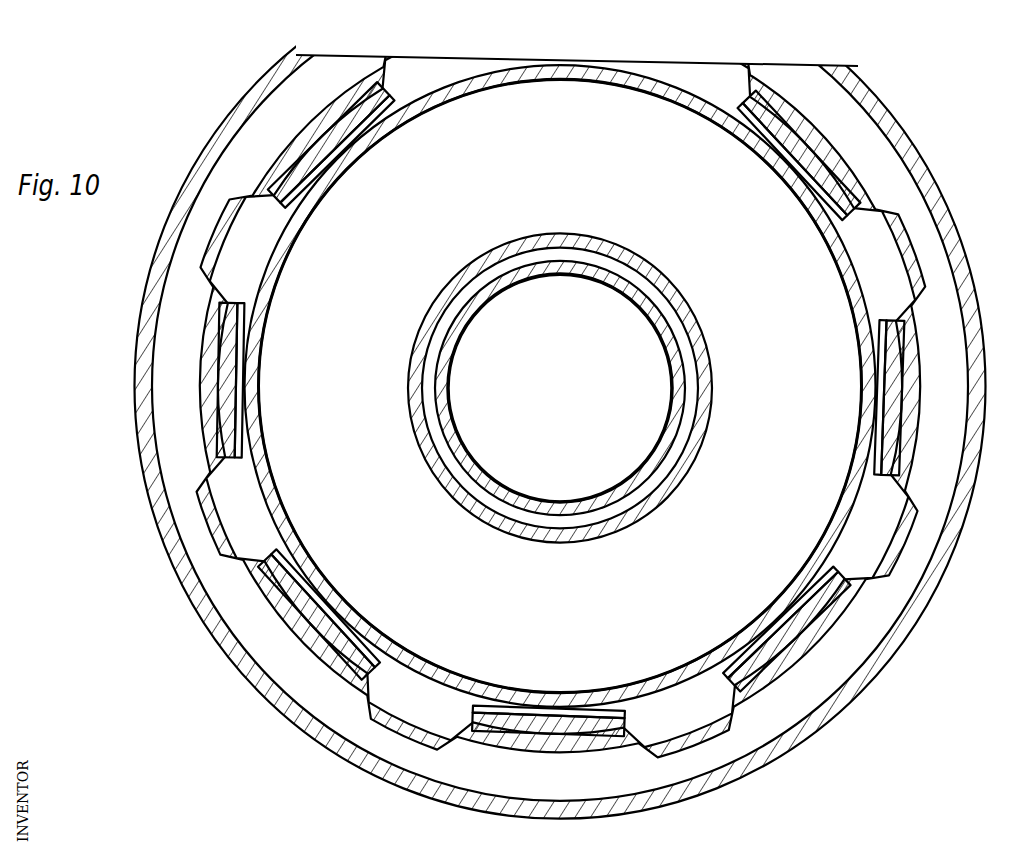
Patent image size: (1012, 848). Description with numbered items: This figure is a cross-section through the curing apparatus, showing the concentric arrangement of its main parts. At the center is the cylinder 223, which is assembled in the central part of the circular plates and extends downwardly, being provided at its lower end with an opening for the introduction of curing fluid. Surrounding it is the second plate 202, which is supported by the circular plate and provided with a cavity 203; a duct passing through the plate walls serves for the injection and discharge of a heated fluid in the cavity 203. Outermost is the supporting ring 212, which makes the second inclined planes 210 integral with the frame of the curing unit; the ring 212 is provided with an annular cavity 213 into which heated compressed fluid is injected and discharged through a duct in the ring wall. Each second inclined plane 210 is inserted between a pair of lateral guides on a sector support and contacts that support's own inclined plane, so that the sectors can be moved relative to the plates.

The second plate 202 is at (422, 358).
The cavity 203 is at (525, 550).
The second inclined plane 210 is at (311, 166).
The supporting ring 212 is at (138, 334).
The annular cavity 213 is at (170, 399).
The cylinder 223 is at (462, 320).